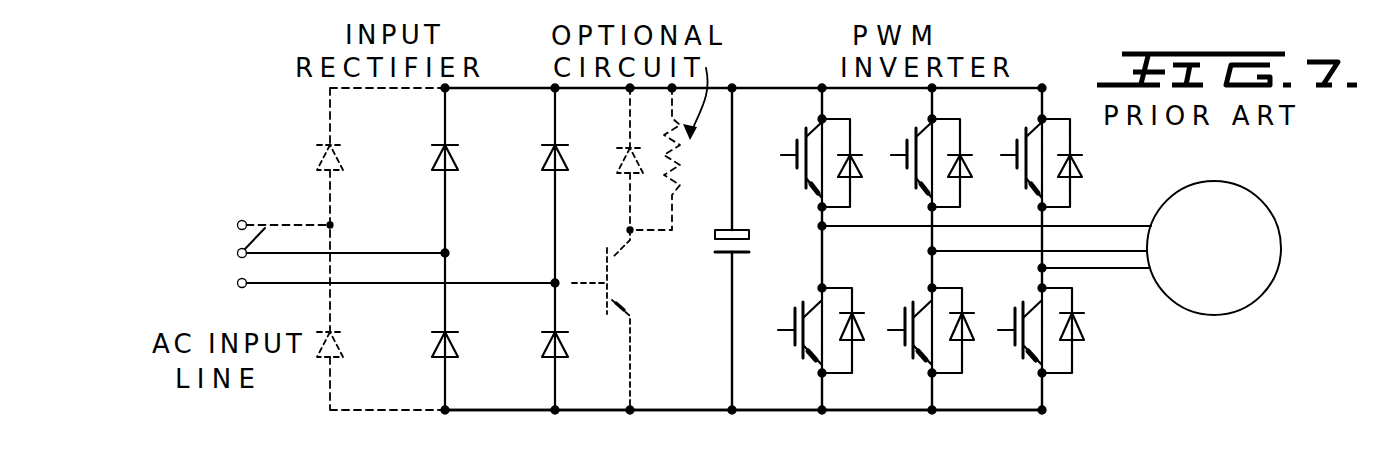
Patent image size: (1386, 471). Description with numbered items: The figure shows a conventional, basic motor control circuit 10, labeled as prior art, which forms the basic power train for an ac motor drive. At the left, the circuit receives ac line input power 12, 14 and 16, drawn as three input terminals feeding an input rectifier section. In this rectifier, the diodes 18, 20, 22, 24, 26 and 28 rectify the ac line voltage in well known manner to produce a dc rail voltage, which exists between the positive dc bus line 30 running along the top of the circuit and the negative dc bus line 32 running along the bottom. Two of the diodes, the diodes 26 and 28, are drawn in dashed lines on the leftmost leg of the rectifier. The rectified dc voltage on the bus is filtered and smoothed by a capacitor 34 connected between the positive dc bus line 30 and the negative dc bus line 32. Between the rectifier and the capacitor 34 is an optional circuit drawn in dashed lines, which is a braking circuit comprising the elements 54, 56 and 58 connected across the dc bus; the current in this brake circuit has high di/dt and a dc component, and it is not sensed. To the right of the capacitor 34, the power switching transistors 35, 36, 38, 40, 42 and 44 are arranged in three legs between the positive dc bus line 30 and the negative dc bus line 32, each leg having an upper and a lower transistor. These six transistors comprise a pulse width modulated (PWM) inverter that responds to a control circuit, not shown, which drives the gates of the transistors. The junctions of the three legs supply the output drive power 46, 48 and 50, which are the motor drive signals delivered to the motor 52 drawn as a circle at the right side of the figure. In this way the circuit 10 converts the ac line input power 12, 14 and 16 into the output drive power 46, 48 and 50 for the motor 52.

The motor control circuit 10 is at (698, 381).
The ac line input power 12 is at (236, 283).
The ac line input power 14 is at (254, 242).
The ac line input power 16 is at (237, 225).
The diode 18 is at (455, 160).
The diode 20 is at (441, 355).
The diode 22 is at (542, 160).
The diode 24 is at (548, 348).
The diode 26 is at (318, 160).
The diode 28 is at (340, 333).
The positive dc bus line 30 is at (762, 88).
The negative dc bus line 32 is at (776, 420).
The capacitor 34 is at (750, 235).
The power switching transistor 35 is at (832, 195).
The power switching transistor 36 is at (836, 365).
The power switching transistor 38 is at (950, 135).
The power switching transistor 40 is at (952, 360).
The power switching transistor 42 is at (1034, 176).
The power switching transistor 44 is at (1060, 345).
The output drive power 46 is at (1092, 228).
The output drive power 48 is at (1120, 245).
The output drive power 50 is at (1098, 272).
The motor 52 is at (1268, 220).
The braking circuit element 54 is at (633, 290).
The braking circuit element 56 is at (682, 150).
The braking circuit element 58 is at (618, 150).